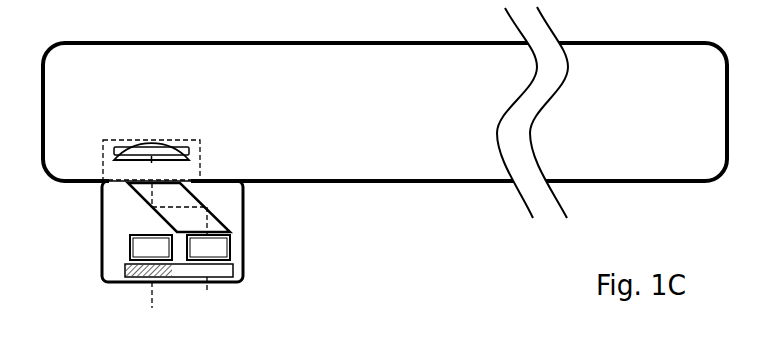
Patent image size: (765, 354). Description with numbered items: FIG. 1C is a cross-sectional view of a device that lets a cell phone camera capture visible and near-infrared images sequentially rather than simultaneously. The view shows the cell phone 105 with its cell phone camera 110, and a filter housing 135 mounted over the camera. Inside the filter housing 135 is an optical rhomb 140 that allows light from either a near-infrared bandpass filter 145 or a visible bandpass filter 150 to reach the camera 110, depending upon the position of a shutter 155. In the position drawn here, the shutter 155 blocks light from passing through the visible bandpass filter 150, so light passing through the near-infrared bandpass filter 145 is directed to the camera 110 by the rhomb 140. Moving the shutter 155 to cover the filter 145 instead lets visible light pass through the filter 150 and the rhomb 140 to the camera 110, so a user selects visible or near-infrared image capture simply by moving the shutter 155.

The cell phone 105 is at (400, 120).
The cell phone camera 110 is at (200, 147).
The filter housing 135 is at (243, 215).
The optical rhomb 140 is at (162, 217).
The near-infrared bandpass filter 145 is at (230, 248).
The visible bandpass filter 150 is at (130, 245).
The shutter 155 is at (170, 272).